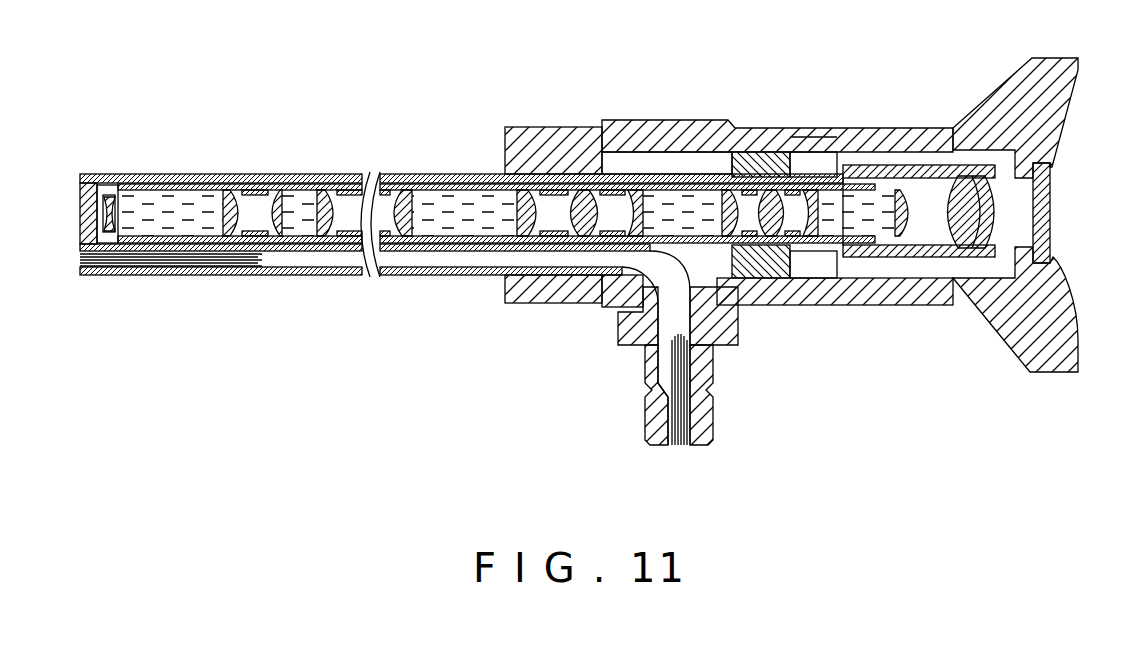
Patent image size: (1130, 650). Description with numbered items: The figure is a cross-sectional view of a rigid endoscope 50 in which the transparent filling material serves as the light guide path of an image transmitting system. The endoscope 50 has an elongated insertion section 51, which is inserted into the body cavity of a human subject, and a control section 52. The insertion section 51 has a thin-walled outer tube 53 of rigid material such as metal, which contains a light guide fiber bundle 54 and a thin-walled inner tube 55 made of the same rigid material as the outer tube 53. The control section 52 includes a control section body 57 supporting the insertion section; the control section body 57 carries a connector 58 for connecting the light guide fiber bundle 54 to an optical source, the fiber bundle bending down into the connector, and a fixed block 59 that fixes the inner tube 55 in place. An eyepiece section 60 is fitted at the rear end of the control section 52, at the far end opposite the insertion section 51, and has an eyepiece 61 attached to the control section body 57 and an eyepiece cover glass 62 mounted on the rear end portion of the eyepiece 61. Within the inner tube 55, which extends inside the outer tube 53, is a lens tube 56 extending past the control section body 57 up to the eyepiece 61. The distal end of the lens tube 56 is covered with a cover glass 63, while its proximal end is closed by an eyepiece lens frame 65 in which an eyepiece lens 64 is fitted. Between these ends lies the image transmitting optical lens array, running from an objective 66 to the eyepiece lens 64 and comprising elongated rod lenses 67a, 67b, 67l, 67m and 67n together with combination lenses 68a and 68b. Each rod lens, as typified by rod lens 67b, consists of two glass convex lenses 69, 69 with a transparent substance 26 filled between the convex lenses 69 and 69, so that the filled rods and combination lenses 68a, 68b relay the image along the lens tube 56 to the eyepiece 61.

The transparent substance 26 is at (293, 238).
The endoscope 50 is at (753, 62).
The elongated insertion section 51 is at (310, 280).
The control section 52 is at (595, 308).
The outer tube 53 is at (165, 262).
The light guide fiber bundle 54 is at (675, 335).
The inner tube 55 is at (364, 252).
The lens tube 56 is at (216, 248).
The control section body 57 is at (522, 298).
The connector 58 is at (705, 385).
The fixed block 59 is at (795, 292).
The eyepiece section 60 is at (952, 115).
The eyepiece 61 is at (1007, 337).
The eyepiece cover glass 62 is at (1052, 197).
The cover glass 63 is at (88, 196).
The eyepiece lens 64 is at (948, 249).
The eyepiece lens frame 65 is at (886, 257).
The objective 66 is at (110, 232).
The rod lens 67a is at (170, 184).
The rod lens 67b is at (292, 184).
The rod lens 67l is at (423, 172).
The rod lens 67m is at (694, 165).
The rod lens 67n is at (864, 166).
The combination lens 68a is at (578, 215).
The combination lens 68b is at (772, 210).
The convex lens 69 is at (270, 240).